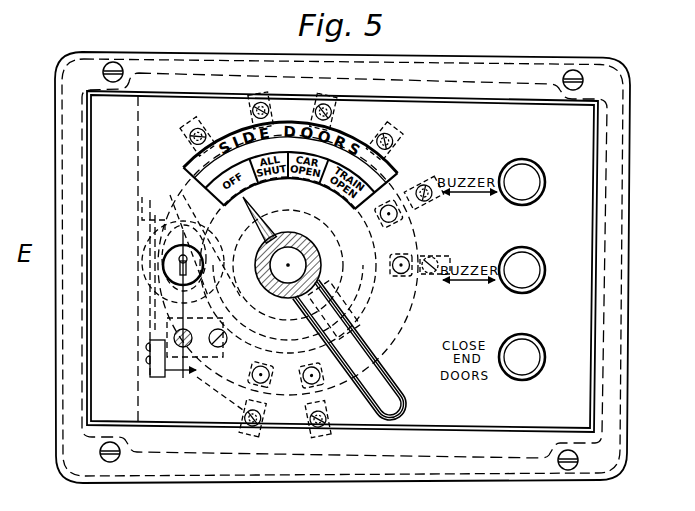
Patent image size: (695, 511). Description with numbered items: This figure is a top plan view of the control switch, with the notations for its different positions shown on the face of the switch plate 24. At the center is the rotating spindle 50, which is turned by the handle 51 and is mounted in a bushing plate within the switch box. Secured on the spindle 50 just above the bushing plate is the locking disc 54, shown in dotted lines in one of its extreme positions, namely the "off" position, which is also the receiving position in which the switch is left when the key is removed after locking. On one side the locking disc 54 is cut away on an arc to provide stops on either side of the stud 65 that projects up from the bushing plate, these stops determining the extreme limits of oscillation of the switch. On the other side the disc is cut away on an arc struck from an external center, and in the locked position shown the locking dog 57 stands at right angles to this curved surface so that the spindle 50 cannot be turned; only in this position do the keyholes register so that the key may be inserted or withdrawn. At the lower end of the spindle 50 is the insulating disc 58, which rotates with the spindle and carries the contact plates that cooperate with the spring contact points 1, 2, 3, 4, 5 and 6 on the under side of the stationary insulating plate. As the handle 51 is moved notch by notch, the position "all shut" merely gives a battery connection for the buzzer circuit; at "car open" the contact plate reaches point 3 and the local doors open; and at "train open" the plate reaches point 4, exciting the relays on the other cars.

The spring contact point 1 is at (188, 143).
The spring contact point 2 is at (251, 114).
The spring contact point 3 is at (315, 98).
The spring contact point 4 is at (380, 126).
The spring contact point 5 is at (421, 184).
The spring contact point 6 is at (431, 257).
The rotating spindle 50 is at (288, 275).
The handle 51 is at (389, 373).
The locking disc 54 is at (270, 220).
The locking dog 57 is at (204, 266).
The insulating disc 58 is at (414, 318).
The stud 65 is at (352, 300).
The panel 24 is at (254, 503).